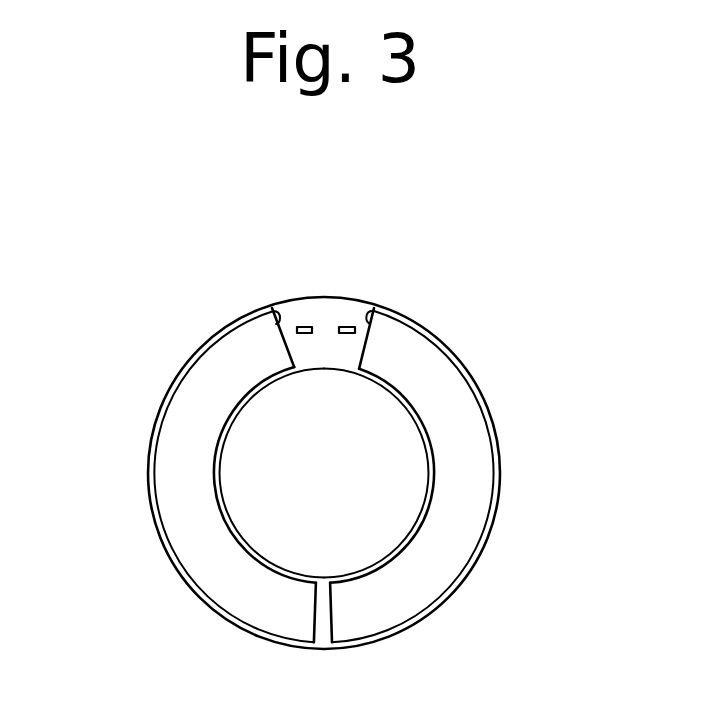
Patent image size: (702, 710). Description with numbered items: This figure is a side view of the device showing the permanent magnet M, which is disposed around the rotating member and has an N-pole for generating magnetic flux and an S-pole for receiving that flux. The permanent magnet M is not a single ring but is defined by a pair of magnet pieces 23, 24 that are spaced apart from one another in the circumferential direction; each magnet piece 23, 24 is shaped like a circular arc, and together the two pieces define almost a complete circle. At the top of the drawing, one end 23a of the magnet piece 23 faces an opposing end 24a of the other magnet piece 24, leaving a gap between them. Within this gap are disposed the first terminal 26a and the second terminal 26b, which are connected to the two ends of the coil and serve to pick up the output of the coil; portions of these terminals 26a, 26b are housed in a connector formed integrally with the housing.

The permanent magnet M is at (471, 363).
The magnet piece 23 is at (170, 450).
The magnet piece 24 is at (473, 459).
The end of magnet piece 23a is at (272, 308).
The end of magnet piece 24a is at (372, 310).
The first terminal 26a is at (305, 327).
The second terminal 26b is at (350, 327).